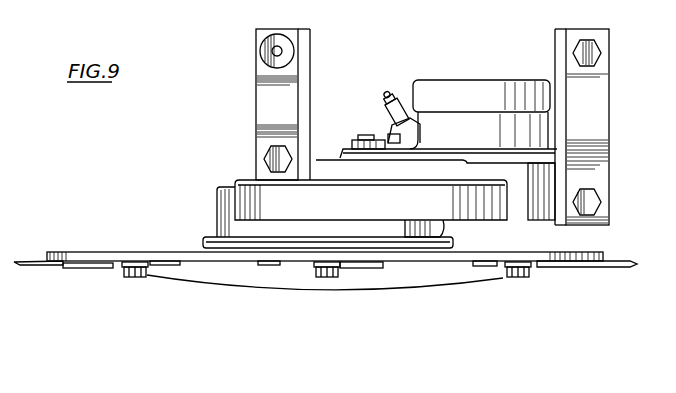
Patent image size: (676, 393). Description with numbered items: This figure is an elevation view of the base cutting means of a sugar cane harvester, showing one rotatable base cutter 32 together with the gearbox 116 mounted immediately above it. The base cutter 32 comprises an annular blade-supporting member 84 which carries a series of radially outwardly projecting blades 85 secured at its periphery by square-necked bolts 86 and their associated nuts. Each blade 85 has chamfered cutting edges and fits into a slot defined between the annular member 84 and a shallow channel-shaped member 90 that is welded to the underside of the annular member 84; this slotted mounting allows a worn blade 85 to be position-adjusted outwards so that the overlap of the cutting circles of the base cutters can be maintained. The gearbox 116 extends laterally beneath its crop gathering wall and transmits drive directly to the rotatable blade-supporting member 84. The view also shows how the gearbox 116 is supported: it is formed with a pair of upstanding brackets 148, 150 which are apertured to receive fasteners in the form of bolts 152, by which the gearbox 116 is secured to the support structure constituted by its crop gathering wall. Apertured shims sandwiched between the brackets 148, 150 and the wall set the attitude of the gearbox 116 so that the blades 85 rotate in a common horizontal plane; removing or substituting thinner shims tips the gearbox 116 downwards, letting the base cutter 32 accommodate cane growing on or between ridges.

The upstanding bracket 148 is at (262, 78).
The upstanding bracket 150 is at (604, 33).
The bolt 152 is at (265, 159).
The gearbox 116 is at (227, 182).
The annular blade-supporting member 84 is at (82, 252).
The blade 85 is at (32, 260).
The square-necked bolt 86 is at (133, 278).
The shallow channel-shaped member 90 is at (267, 265).
The base cutter 32 is at (177, 285).